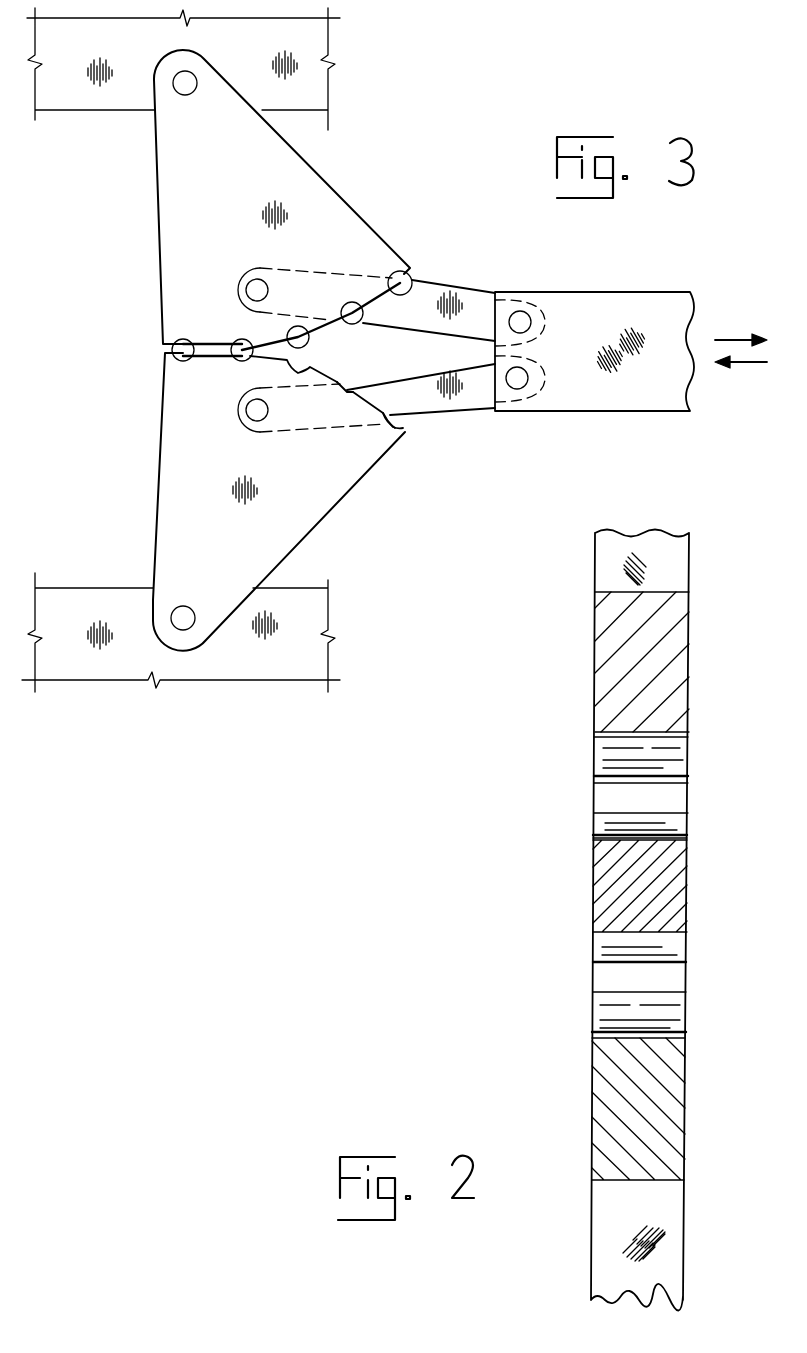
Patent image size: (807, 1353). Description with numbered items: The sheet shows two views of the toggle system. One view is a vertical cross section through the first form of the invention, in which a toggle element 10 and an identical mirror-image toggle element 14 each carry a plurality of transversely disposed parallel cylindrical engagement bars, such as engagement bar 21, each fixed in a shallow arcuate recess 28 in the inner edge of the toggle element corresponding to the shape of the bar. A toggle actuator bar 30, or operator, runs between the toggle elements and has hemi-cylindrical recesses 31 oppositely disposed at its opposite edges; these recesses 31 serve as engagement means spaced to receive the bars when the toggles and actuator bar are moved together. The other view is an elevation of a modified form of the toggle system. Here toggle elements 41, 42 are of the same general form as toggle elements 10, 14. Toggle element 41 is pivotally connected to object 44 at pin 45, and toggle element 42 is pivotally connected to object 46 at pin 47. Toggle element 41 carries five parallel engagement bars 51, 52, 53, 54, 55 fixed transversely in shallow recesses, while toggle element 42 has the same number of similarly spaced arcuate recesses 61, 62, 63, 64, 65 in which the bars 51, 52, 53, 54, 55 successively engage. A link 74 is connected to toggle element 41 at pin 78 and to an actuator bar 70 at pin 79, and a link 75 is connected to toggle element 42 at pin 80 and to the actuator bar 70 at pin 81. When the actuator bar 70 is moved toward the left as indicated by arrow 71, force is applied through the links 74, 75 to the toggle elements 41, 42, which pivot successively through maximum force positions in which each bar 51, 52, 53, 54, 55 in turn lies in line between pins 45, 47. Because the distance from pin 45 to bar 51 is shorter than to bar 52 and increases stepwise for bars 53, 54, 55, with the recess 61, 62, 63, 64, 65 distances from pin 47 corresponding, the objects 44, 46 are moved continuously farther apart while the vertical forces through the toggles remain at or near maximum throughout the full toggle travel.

In FIG. 2, the toggle element 10 is at (595, 563).
In FIG. 2, the toggle element 14 is at (590, 1212).
In FIG. 2, the engagement bar 21 is at (592, 1017).
In FIG. 2, the shallow arcuate recess 28 is at (663, 1038).
In FIG. 2, the toggle actuator bar 30 is at (592, 887).
In FIG. 2, the hemi-cylindrical recess 31 is at (663, 937).
In FIG. 3, the toggle element 41 is at (330, 184).
In FIG. 3, the toggle element 42 is at (340, 502).
In FIG. 3, the object 44 is at (68, 112).
In FIG. 3, the pin 45 is at (181, 96).
In FIG. 3, the object 46 is at (78, 587).
In FIG. 3, the pin 47 is at (182, 606).
In FIG. 3, the engagement bar 51 is at (186, 339).
In FIG. 3, the engagement bar 52 is at (247, 339).
In FIG. 3, the engagement bar 53 is at (309, 339).
In FIG. 3, the engagement bar 54 is at (355, 324).
In FIG. 3, the engagement bar 55 is at (412, 275).
In FIG. 3, the arcuate recess 61 is at (178, 360).
In FIG. 3, the arcuate recess 62 is at (235, 358).
In FIG. 3, the arcuate recess 63 is at (305, 370).
In FIG. 3, the arcuate recess 64 is at (347, 391).
In FIG. 3, the arcuate recess 65 is at (395, 428).
In FIG. 3, the actuator bar 70 is at (620, 290).
In FIG. 3, the arrow 71 is at (747, 367).
In FIG. 3, the link 74 is at (460, 290).
In FIG. 3, the link 75 is at (462, 408).
In FIG. 3, the pin 78 is at (246, 290).
In FIG. 3, the pin 79 is at (527, 312).
In FIG. 3, the pin 80 is at (246, 417).
In FIG. 3, the pin 81 is at (518, 389).